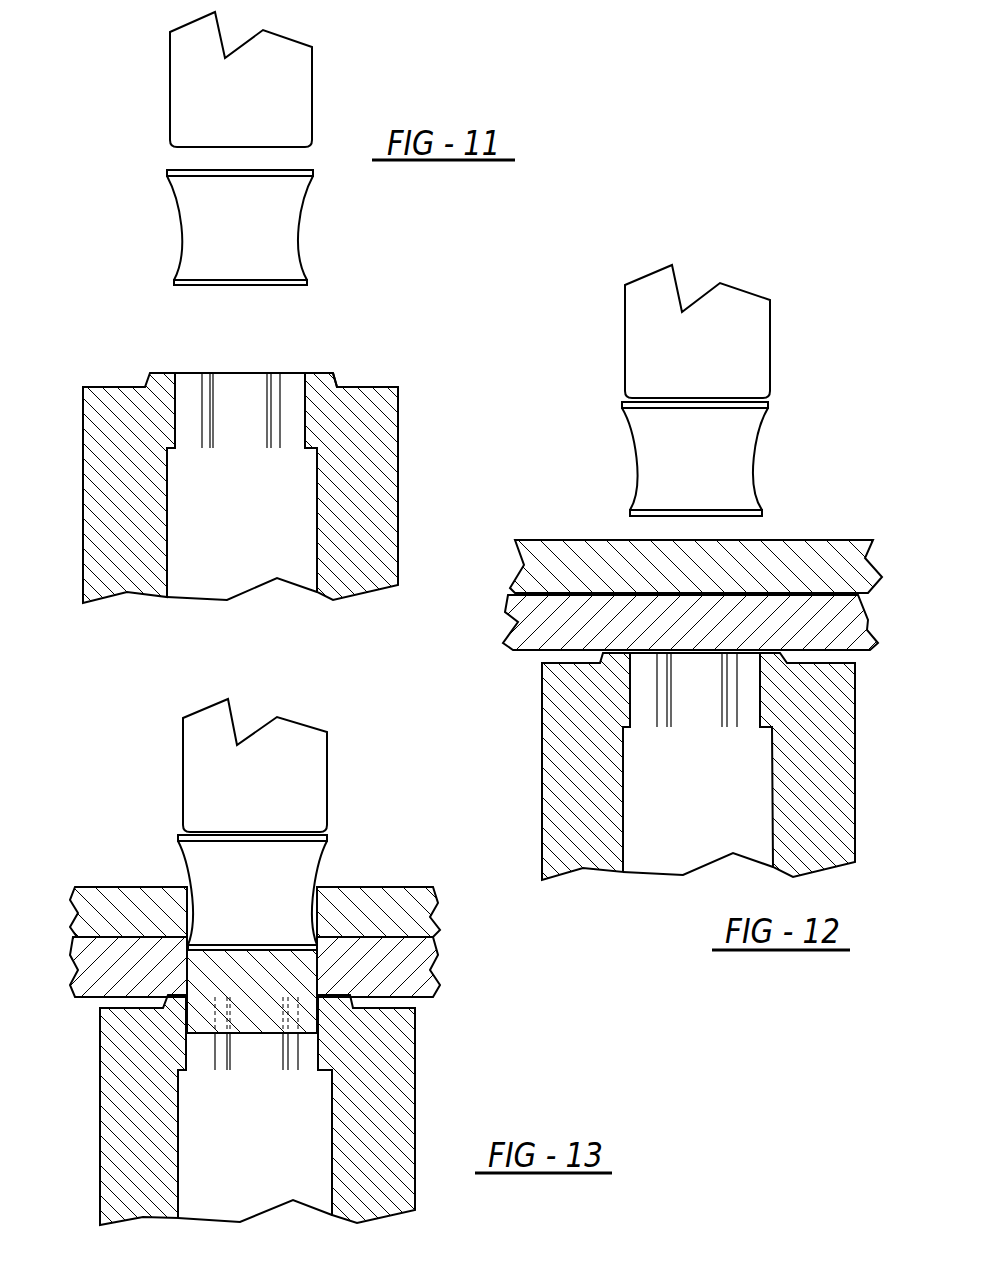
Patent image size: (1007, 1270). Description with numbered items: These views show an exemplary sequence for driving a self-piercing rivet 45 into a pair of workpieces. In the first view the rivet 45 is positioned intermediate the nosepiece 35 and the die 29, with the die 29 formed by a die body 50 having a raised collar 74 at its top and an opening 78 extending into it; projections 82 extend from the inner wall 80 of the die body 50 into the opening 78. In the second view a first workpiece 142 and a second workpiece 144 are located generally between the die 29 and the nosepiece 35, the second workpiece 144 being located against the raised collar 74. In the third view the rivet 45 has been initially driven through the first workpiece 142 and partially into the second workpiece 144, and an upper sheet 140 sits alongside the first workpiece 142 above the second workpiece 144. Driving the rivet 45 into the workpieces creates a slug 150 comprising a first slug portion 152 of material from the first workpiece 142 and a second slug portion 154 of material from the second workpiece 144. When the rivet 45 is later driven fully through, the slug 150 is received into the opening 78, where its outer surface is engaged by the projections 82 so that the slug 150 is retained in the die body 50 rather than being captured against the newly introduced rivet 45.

In FIG. 11, the die 29 is at (83, 452).
In FIG. 12, the die 29 is at (542, 725).
In FIG. 13, the die 29 is at (397, 1038).
In FIG. 11, the nosepiece 35 is at (170, 90).
In FIG. 12, the nosepiece 35 is at (625, 347).
In FIG. 13, the nosepiece 35 is at (183, 768).
In FIG. 11, the rivet 45 is at (181, 212).
In FIG. 12, the rivet 45 is at (636, 451).
In FIG. 13, the rivet 45 is at (200, 855).
In FIG. 12, the die body 50 is at (830, 807).
In FIG. 13, the die body 50 is at (398, 1077).
In FIG. 11, the raised collar 74 is at (324, 370).
In FIG. 12, the raised collar 74 is at (778, 657).
In FIG. 11, the opening 78 is at (253, 373).
In FIG. 11, the inner wall 80 is at (177, 420).
In FIG. 12, the inner wall 80 is at (630, 697).
In FIG. 13, the inner wall 80 is at (200, 1055).
In FIG. 11, the projections 82 is at (210, 410).
In FIG. 12, the projections 82 is at (667, 685).
In FIG. 13, the projections 82 is at (288, 1053).
In FIG. 13, the upper sheet 140 is at (122, 908).
In FIG. 12, the first workpiece 142 is at (812, 557).
In FIG. 13, the first workpiece 142 is at (390, 910).
In FIG. 12, the second workpiece 144 is at (565, 623).
In FIG. 13, the second workpiece 144 is at (407, 967).
In FIG. 13, the slug 150 is at (257, 957).
In FIG. 13, the first slug portion 152 is at (225, 963).
In FIG. 13, the second slug portion 154 is at (260, 1018).